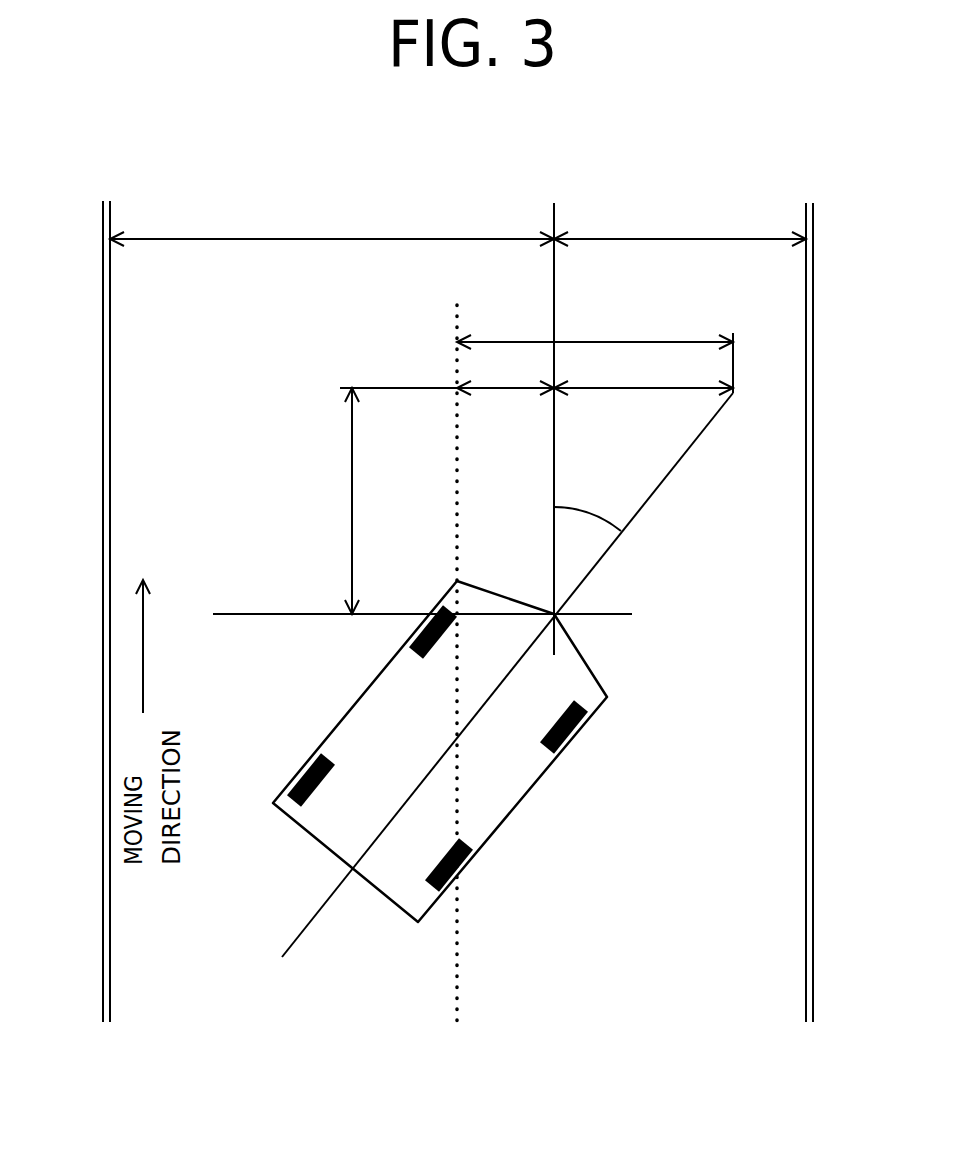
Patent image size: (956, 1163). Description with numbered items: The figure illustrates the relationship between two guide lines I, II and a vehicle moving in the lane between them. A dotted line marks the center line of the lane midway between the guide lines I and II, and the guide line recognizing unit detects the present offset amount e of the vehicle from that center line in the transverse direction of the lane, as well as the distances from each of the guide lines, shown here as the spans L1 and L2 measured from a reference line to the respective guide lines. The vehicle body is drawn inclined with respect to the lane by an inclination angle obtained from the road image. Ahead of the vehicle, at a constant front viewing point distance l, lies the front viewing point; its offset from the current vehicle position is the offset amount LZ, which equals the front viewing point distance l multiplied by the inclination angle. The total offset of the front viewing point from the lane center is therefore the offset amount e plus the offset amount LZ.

The guide line I is at (812, 455).
The guide line II is at (102, 460).
The distance from center line to right wall L1 is at (680, 218).
The distance from center line to left wall L2 is at (332, 215).
The offset amount of the vehicle e is at (447, 370).
The offset amount of front viewing point from current vehicle position LZ is at (643, 371).
The front viewing point distance l is at (336, 501).